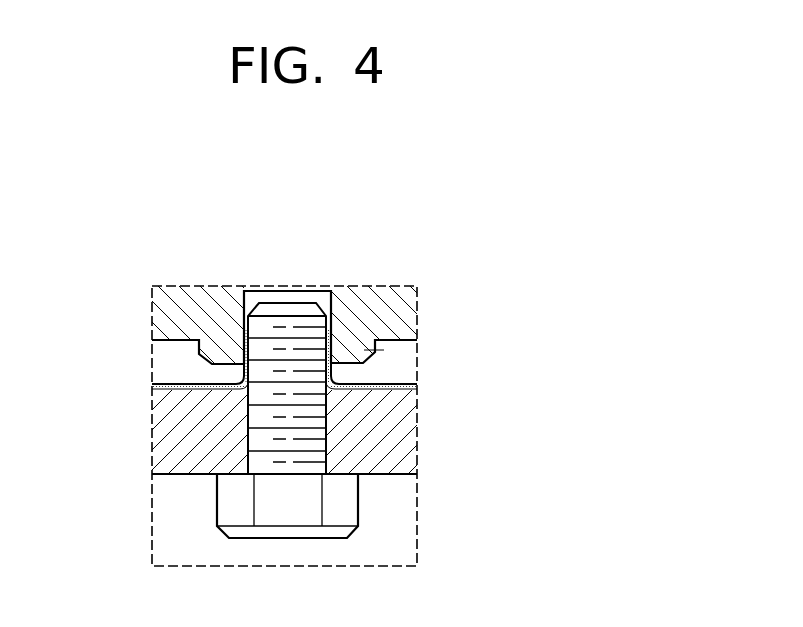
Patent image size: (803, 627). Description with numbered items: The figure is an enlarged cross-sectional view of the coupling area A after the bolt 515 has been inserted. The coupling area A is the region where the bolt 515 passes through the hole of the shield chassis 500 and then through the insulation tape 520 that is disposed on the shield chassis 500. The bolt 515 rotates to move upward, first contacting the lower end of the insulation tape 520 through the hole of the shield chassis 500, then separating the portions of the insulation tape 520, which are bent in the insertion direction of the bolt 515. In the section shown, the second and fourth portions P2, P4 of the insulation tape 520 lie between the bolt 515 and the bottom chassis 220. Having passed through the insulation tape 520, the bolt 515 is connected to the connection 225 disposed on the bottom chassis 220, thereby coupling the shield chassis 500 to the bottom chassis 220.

The coupling area A is at (410, 206).
The bottom chassis 220 is at (403, 304).
The second portion P2 is at (331, 345).
The fourth portion P4 is at (244, 350).
The connection 225 is at (364, 352).
The insulation tape 520 is at (417, 383).
The shield chassis 500 is at (403, 432).
The bolt 515 is at (347, 501).